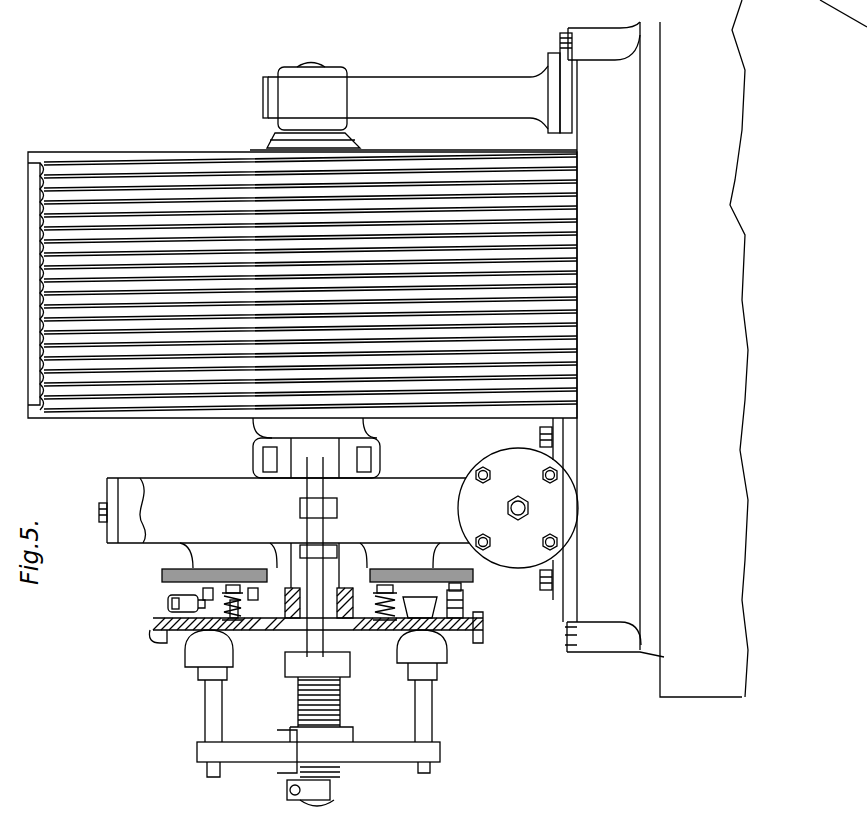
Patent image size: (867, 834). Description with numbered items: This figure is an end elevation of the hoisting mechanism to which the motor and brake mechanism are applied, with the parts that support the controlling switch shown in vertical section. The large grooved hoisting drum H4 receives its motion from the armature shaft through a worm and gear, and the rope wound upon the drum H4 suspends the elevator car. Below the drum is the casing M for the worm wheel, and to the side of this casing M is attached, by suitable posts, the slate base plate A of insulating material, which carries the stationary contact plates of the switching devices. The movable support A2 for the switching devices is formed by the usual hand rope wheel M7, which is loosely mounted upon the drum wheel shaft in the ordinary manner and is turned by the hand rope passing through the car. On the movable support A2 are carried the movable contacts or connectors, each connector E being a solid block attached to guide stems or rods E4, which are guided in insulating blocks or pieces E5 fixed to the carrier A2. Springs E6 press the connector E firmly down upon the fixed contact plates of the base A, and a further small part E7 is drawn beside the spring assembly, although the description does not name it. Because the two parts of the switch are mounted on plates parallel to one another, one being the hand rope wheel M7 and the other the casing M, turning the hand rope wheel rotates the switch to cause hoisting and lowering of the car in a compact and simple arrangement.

The hoisting drum H4 is at (188, 151).
The casing for the worm wheel M is at (284, 510).
The hand rope wheel M7 is at (153, 640).
The base plate A is at (160, 589).
The movable frame or support A2 is at (160, 597).
The movable contact or connector E is at (385, 632).
The guide stems or rods E4 is at (375, 604).
The insulating blocks or pieces E5 is at (243, 622).
The springs E6 is at (245, 608).
The wedge block E7 is at (403, 606).